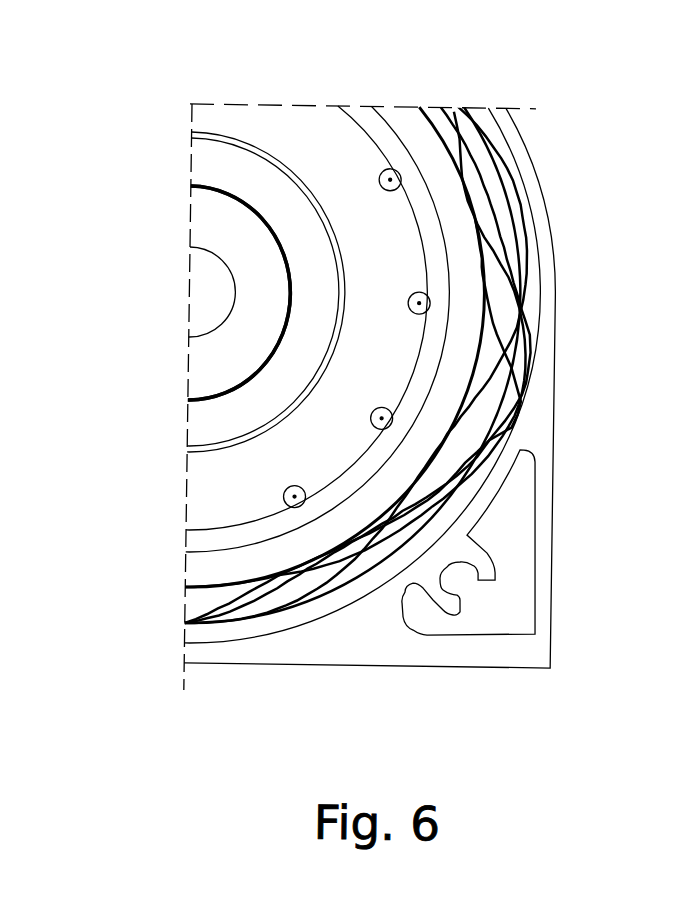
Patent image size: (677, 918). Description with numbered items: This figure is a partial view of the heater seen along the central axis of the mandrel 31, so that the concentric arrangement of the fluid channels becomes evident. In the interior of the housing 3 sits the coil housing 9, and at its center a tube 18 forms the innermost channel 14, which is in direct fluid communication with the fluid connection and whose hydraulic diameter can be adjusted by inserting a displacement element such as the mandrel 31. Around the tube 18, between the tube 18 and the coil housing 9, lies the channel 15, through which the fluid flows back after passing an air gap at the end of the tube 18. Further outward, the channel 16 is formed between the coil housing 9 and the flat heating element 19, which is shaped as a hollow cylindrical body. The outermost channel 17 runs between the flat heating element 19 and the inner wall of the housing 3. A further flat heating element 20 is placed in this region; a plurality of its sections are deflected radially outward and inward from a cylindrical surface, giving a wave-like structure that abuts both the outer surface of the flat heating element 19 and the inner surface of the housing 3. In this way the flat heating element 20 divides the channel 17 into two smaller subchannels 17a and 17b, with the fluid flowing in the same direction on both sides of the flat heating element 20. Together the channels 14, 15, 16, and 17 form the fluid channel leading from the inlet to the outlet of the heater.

The housing 3 is at (378, 642).
The coil housing 9 is at (218, 104).
The channel 14 is at (219, 226).
The channel 15 is at (216, 162).
The channel 16 is at (390, 114).
The channel 17 is at (421, 329).
The subchannel 17a is at (501, 299).
The subchannel 17b is at (508, 419).
The tube 18 is at (216, 191).
The flat heating element 19 is at (425, 107).
The flat heating element 20 is at (520, 230).
The mandrel 31 is at (205, 282).